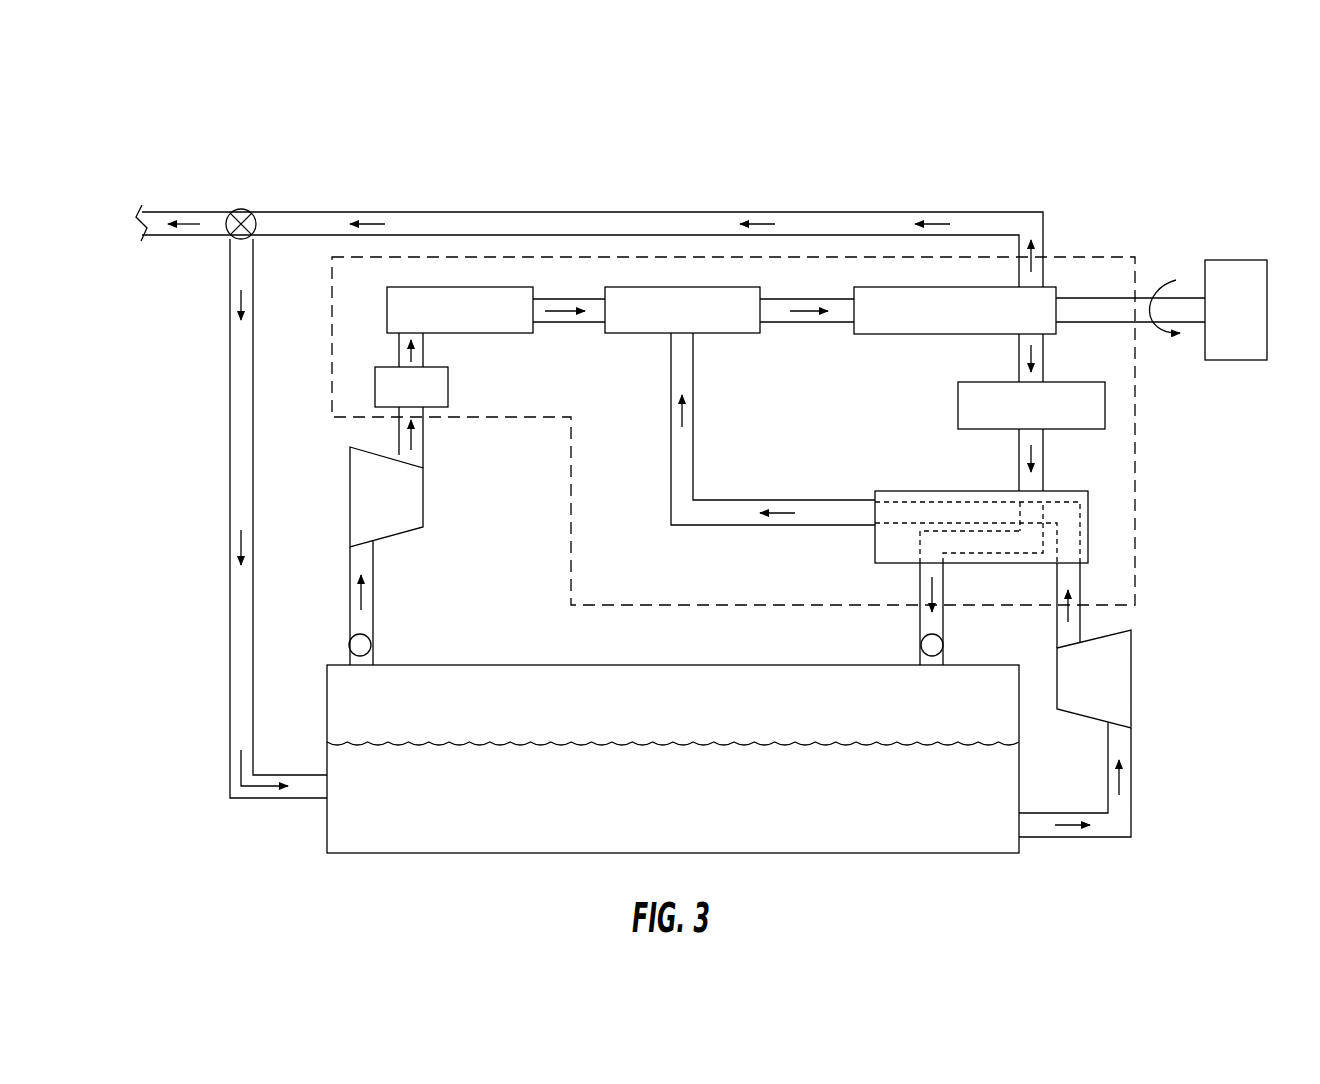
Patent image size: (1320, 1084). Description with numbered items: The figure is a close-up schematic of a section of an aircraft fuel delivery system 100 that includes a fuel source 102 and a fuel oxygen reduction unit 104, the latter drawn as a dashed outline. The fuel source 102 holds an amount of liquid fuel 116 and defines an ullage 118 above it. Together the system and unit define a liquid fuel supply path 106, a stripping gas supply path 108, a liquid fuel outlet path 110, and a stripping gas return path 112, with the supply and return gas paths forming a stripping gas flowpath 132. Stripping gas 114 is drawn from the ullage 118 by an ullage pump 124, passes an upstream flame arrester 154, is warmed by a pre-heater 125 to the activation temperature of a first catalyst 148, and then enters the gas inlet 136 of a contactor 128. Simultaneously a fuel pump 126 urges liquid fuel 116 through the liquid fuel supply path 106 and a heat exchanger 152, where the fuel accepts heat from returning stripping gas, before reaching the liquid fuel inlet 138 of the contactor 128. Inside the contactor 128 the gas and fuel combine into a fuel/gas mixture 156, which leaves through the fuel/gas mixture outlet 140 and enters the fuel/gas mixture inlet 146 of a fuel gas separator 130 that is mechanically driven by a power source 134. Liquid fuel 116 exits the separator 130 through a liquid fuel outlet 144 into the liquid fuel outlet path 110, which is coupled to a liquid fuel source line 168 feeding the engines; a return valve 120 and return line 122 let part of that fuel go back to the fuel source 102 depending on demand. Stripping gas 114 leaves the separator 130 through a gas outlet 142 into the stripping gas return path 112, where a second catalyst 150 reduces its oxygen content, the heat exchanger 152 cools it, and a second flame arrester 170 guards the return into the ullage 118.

The fuel delivery system 100 is at (812, 118).
The fuel source 102 is at (852, 854).
The fuel oxygen reduction unit 104 is at (567, 255).
The liquid fuel supply path 106 is at (670, 482).
The stripping gas supply path 108 is at (434, 348).
The liquid fuel outlet path 110 is at (831, 210).
The stripping gas return path 112 is at (1046, 462).
The stripping gas 114 is at (557, 310).
The liquid fuel 116 is at (936, 222).
The ullage 118 is at (502, 690).
The return valve 120 is at (250, 211).
The return line 122 is at (229, 445).
The ullage pump 124 is at (349, 481).
The pre-heater 125 is at (376, 381).
The fuel pump 126 is at (1134, 670).
The contactor 128 is at (746, 286).
The fuel gas separator 130 is at (905, 335).
The stripping gas flowpath 132 is at (917, 590).
The power source 134 is at (1254, 327).
The gas inlet 136 is at (602, 322).
The liquid fuel inlet 138 is at (670, 336).
The fuel/gas mixture outlet 140 is at (763, 320).
The gas outlet 142 is at (1038, 338).
The liquid fuel outlet 144 is at (1038, 284).
The fuel/gas mixture inlet 146 is at (851, 320).
The first catalyst 148 is at (395, 287).
The second catalyst 150 is at (1106, 410).
The heat exchanger 152 is at (1089, 518).
The upstream flame arrester 154 is at (364, 645).
The fuel/gas mixture 156 is at (800, 318).
The liquid fuel source line 168 is at (194, 212).
The second flame arrester 170 is at (926, 642).